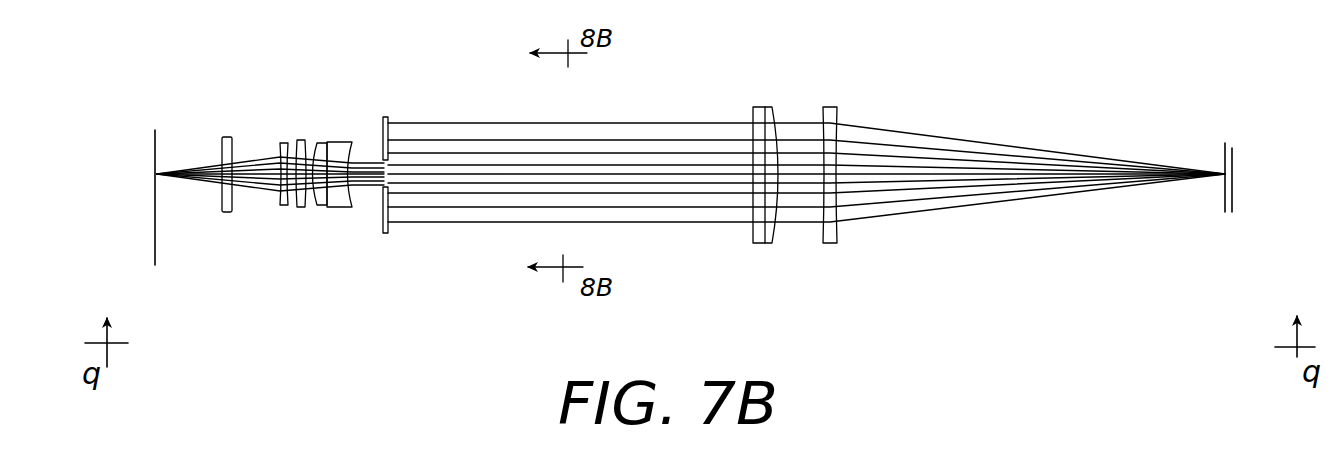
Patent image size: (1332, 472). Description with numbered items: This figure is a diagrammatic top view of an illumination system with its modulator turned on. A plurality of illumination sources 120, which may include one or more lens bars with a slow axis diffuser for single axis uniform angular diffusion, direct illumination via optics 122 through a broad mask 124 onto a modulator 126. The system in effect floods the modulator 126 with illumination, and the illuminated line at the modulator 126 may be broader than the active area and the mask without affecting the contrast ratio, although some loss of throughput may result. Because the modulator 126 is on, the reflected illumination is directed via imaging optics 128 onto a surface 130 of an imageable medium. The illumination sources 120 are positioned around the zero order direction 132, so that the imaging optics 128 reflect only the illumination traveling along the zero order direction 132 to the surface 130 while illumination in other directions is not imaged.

The illumination sources 120 is at (383, 120).
The optics 122 is at (843, 90).
The broad mask 124 is at (1223, 170).
The modulator 126 is at (1234, 173).
The imaging optics 128 is at (360, 133).
The surface of an imageable medium 130 is at (155, 220).
The zero order direction 132 is at (392, 172).